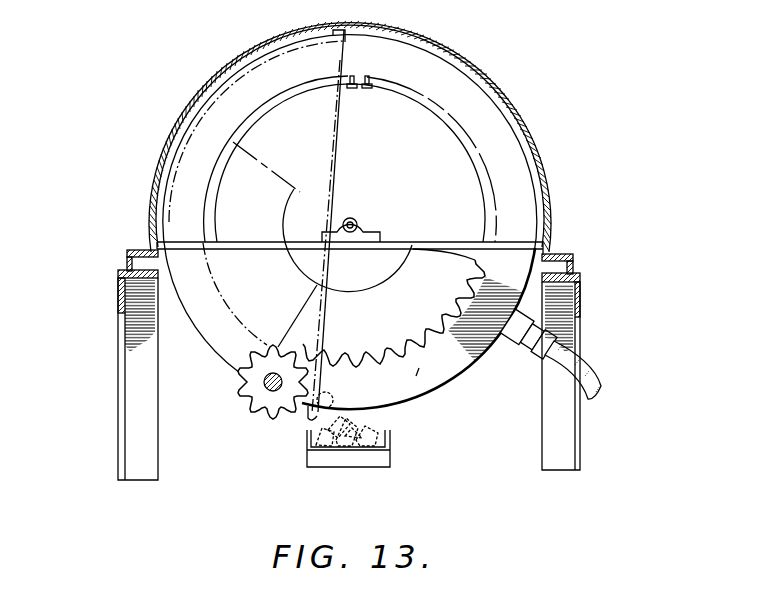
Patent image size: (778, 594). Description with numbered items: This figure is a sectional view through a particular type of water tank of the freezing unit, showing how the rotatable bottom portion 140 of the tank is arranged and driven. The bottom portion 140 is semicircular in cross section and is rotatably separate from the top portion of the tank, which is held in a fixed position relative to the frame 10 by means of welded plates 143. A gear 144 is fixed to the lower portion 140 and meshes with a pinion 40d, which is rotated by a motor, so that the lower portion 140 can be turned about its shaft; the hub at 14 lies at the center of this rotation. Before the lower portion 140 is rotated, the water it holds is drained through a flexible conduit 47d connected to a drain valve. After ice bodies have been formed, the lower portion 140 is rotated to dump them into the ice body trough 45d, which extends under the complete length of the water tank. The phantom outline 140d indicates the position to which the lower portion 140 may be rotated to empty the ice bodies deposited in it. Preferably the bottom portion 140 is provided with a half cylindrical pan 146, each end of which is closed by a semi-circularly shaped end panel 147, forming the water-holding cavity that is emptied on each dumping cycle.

The frame 10 is at (590, 432).
The shaft 14 is at (360, 219).
The pinion 40d is at (258, 397).
The ice body trough 45d is at (390, 436).
The flexible conduit 47d is at (593, 378).
The bottom portion 140 is at (498, 347).
The rotated position of lower portion 140d is at (178, 150).
The welded plates 143 is at (128, 263).
The gear 144 is at (394, 308).
The half cylindrical pan 146 is at (340, 214).
The end panel 147 is at (419, 372).